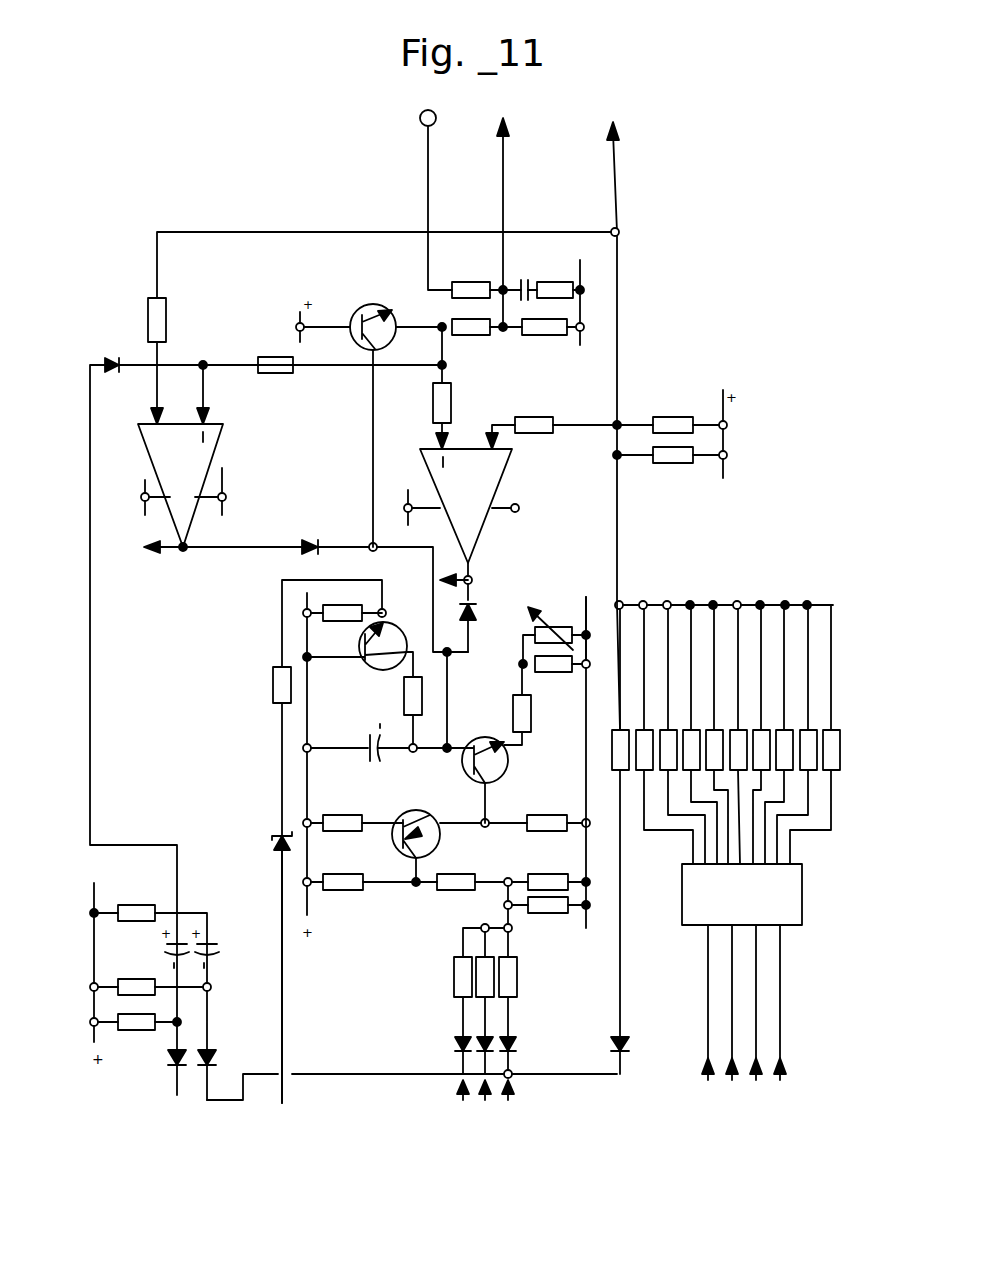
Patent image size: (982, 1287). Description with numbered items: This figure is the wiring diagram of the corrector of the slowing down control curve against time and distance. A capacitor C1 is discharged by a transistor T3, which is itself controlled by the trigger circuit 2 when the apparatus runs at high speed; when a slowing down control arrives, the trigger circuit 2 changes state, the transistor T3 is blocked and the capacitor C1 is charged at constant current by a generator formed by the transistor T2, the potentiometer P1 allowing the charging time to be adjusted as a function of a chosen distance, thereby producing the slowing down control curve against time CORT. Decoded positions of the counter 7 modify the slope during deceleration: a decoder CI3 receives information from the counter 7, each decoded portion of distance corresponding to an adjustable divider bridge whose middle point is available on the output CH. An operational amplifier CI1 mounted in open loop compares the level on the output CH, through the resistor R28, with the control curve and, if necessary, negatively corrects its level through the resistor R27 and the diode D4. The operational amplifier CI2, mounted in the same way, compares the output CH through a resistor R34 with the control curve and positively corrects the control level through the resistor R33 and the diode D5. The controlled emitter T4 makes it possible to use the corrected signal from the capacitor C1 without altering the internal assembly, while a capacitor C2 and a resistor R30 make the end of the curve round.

The resistor R34 is at (168, 318).
The controlled emitter T4 is at (373, 304).
The capacitor C2 is at (527, 275).
The resistor R30 is at (560, 285).
The output CH is at (615, 143).
The resistor R33 is at (270, 373).
The resistor R27 is at (452, 395).
The resistor R28 is at (540, 417).
The operational amplifier CI2 is at (205, 460).
The operational amplifier CI1 is at (492, 488).
The slowing down control curve against time CORT is at (373, 455).
The diode D5 is at (310, 532).
The diode D4 is at (483, 608).
The potentiometer P1 is at (545, 605).
The transistor T3 is at (366, 662).
The capacitor C1 is at (365, 762).
The transistor T2 is at (508, 765).
The decoder CI3 is at (780, 890).
The trigger circuit 2 is at (285, 1003).
The counter 7 is at (455, 1095).